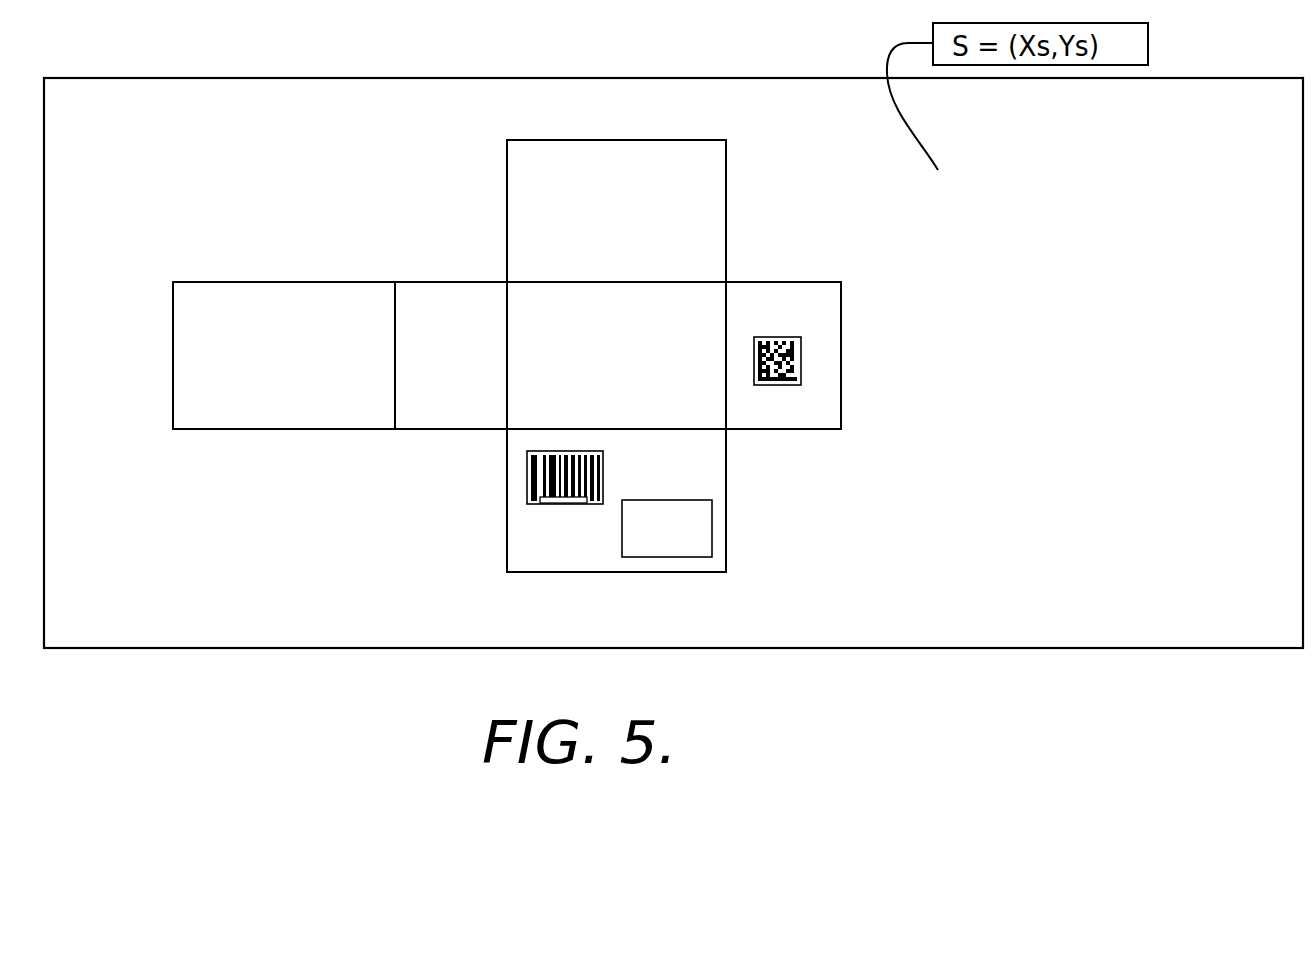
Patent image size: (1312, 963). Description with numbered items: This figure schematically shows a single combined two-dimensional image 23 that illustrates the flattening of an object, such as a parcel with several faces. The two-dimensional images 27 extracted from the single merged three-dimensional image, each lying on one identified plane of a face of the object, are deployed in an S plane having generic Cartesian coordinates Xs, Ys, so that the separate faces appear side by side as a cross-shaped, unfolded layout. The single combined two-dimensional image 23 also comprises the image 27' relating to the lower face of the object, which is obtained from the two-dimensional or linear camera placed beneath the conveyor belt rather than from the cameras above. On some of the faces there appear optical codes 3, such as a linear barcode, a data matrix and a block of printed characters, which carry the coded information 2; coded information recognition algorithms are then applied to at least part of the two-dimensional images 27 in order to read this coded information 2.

The single combined two-dimensional image 23 is at (297, 214).
The two-dimensional image 27 is at (543, 356).
The image relating to the lower face 27' is at (284, 388).
The coded information 2 is at (733, 445).
The optical code 3 is at (783, 335).